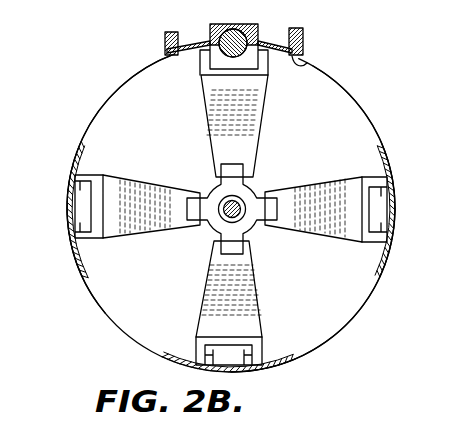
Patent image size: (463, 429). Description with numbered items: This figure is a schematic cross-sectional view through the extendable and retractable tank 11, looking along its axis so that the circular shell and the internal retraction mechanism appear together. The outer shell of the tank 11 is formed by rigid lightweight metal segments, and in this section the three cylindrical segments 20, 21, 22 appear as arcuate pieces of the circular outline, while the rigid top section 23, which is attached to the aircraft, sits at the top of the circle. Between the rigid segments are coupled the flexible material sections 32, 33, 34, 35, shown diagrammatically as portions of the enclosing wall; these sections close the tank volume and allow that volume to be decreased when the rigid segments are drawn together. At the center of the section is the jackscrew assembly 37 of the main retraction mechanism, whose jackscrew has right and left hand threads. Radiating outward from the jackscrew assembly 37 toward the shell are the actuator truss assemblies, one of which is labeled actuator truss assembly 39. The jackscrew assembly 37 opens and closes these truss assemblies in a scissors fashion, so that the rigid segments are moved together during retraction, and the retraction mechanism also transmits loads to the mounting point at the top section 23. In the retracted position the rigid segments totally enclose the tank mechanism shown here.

The tank 11 is at (358, 100).
The cylindrical segment 20 is at (73, 163).
The cylindrical segment 21 is at (275, 368).
The cylindrical segment 22 is at (384, 157).
The rigid top section 23 is at (312, 67).
The flexible material section 32 is at (112, 97).
The flexible material section 33 is at (88, 292).
The flexible material section 34 is at (364, 309).
The flexible material section 35 is at (375, 127).
The jackscrew assembly 37 is at (222, 218).
The actuator truss assembly 39 is at (254, 152).